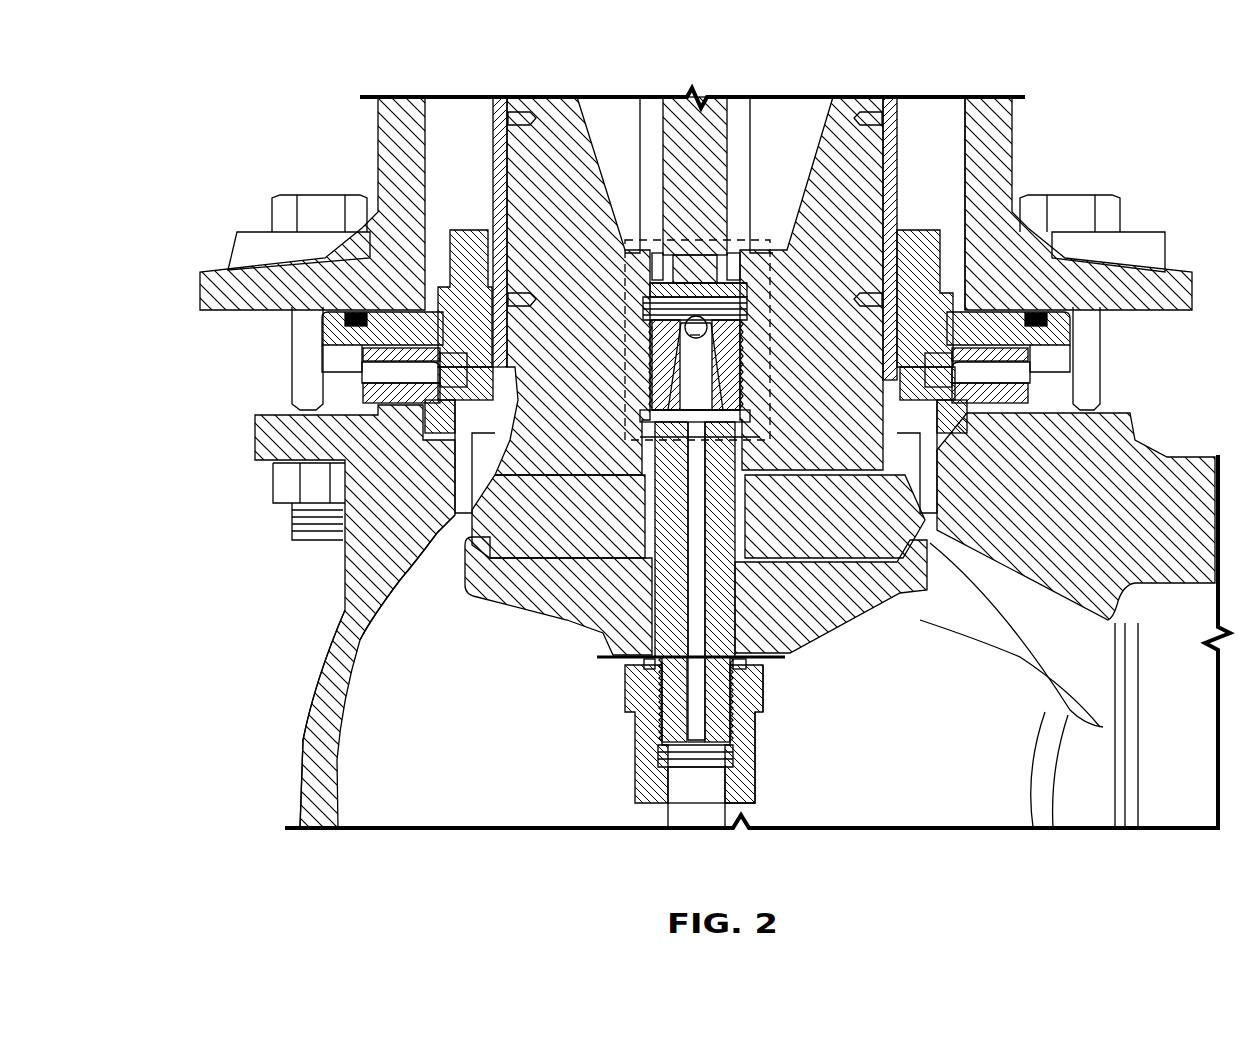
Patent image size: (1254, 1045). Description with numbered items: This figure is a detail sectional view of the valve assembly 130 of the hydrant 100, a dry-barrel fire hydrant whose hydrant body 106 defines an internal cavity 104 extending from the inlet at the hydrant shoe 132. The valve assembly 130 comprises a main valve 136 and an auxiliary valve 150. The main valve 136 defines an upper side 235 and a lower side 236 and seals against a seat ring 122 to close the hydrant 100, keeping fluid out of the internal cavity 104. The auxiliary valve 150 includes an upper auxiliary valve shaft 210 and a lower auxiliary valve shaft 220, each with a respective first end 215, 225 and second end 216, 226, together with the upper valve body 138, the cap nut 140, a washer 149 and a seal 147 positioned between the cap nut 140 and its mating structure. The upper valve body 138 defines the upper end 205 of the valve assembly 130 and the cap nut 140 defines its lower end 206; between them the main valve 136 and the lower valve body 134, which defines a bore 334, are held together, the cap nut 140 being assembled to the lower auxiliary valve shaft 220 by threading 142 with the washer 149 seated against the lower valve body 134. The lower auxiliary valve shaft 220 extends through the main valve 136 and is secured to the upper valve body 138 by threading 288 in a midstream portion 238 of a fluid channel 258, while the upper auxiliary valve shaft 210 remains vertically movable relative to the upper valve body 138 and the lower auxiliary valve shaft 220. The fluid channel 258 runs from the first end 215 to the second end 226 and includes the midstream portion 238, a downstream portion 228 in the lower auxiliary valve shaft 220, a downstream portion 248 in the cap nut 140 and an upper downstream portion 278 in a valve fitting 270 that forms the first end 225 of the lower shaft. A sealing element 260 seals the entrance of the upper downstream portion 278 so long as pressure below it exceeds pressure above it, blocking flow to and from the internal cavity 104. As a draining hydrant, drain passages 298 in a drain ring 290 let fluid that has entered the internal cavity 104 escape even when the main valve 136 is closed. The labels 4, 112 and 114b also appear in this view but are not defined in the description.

The detail region 4 is at (772, 238).
The hydrant 100 is at (1012, 118).
The internal cavity 104 is at (432, 112).
The hydrant body 106 is at (378, 118).
The pump housing 112 is at (1051, 174).
The second coupling portion 114b is at (723, 209).
The seat ring 122 is at (948, 253).
The valve assembly 130 is at (880, 623).
The hydrant shoe 132 is at (303, 693).
The lower valve body 134 is at (527, 583).
The main valve 136 is at (455, 518).
The upper valve body 138 is at (907, 157).
The cap nut 140 is at (634, 752).
The threading 142 is at (660, 690).
The seal 147 is at (656, 661).
The washer 149 is at (790, 662).
The auxiliary valve 150 is at (618, 303).
The upper end 205 is at (622, 240).
The lower end 206 is at (660, 805).
The upper auxiliary valve shaft 210 is at (728, 300).
The first end 215 is at (723, 222).
The second end 216 is at (639, 97).
The lower auxiliary valve shaft 220 is at (805, 600).
The first end 225 is at (748, 250).
The second end 226 is at (680, 750).
The downstream portion 228 is at (858, 730).
The upper side 235 is at (594, 470).
The lower side 236 is at (567, 562).
The midstream portion 238 is at (722, 296).
The downstream portion 248 is at (723, 783).
The fluid channel 258 is at (758, 714).
The sealing element 260 is at (686, 336).
The valve fitting 270 is at (720, 318).
The upper downstream portion 278 is at (745, 418).
The threading 288 is at (756, 271).
The drain ring 290 is at (377, 412).
The drain passages 298 is at (385, 372).
The bore 334 is at (742, 632).